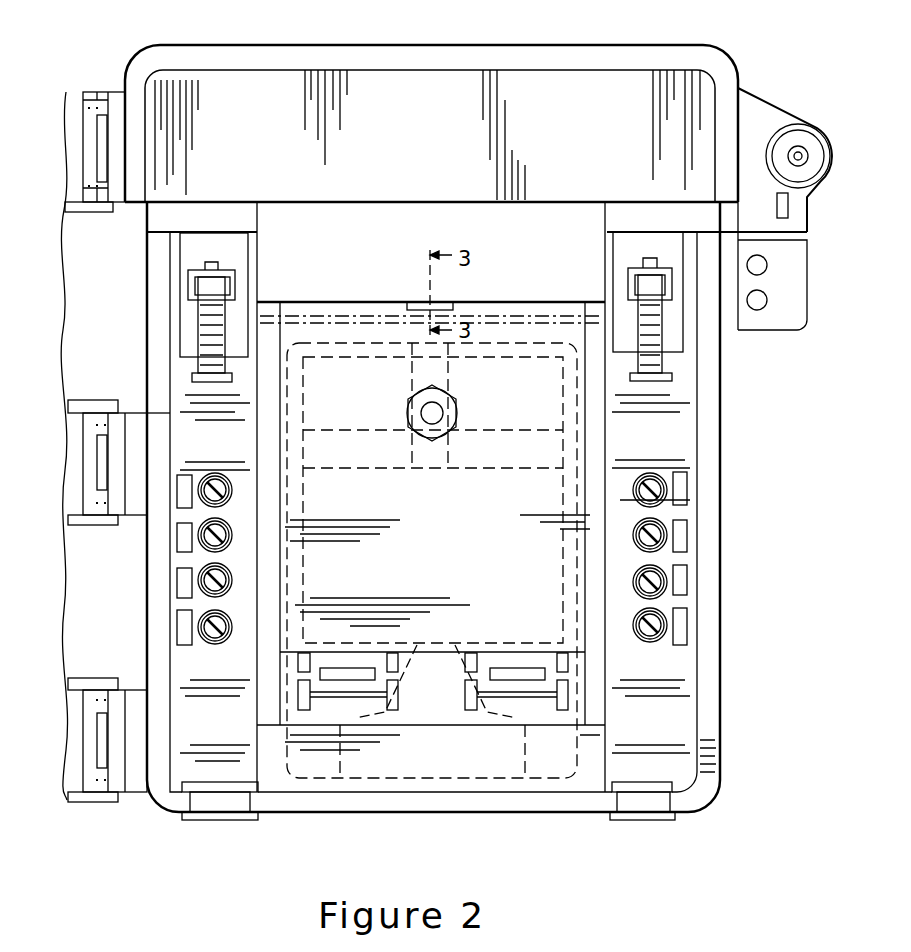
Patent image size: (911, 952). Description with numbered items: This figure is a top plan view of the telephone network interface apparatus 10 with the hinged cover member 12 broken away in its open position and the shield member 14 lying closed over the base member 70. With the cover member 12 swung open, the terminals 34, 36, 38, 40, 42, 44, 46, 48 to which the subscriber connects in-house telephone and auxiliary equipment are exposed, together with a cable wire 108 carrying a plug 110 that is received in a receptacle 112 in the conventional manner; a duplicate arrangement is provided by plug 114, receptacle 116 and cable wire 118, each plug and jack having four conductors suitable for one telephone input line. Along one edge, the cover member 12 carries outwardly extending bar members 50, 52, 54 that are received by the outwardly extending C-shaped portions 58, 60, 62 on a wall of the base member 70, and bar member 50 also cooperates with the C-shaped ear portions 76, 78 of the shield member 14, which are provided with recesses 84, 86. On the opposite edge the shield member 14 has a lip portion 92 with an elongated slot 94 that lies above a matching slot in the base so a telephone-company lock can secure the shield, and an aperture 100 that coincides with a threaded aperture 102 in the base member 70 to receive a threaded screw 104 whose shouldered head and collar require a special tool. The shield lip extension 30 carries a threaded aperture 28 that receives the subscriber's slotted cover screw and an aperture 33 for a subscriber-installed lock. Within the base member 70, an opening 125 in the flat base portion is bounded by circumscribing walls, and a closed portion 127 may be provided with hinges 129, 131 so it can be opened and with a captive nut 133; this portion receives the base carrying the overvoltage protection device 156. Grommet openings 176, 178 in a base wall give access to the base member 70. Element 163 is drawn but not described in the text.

The telephone network interface apparatus 10 is at (577, 36).
The cover member 12 is at (66, 92).
The shield member 14 is at (688, 75).
The threaded aperture 28 is at (765, 266).
The shield lip extension 30 is at (795, 296).
The aperture 33 is at (760, 304).
The terminal 34 is at (233, 492).
The terminal 36 is at (233, 537).
The terminal 38 is at (233, 581).
The terminal 40 is at (233, 627).
The terminal 42 is at (668, 491).
The terminal 44 is at (668, 536).
The terminal 46 is at (668, 584).
The terminal 48 is at (668, 627).
The bar member 50 is at (100, 162).
The bar member 52 is at (103, 473).
The bar member 54 is at (103, 752).
The C-shaped portion 58 is at (85, 125).
The C-shaped portion 60 is at (87, 443).
The C-shaped portion 62 is at (88, 714).
The base member 70 is at (747, 762).
The C-shaped portion 76 is at (88, 96).
The C-shaped portion 78 is at (85, 197).
The recess 84 is at (103, 96).
The recess 86 is at (97, 208).
The lip portion 92 is at (757, 112).
The elongated slot 94 is at (785, 210).
The aperture 100 is at (798, 148).
The threaded aperture 102 is at (798, 156).
The threaded screw 104 is at (810, 153).
The cable wire 108 is at (205, 322).
The plug 110 is at (197, 288).
The receptacle 112 is at (218, 278).
The plug 114 is at (660, 280).
The receptacle 116 is at (637, 275).
The cable wire 118 is at (665, 330).
The opening 125 is at (604, 452).
The closed portion 127 is at (432, 514).
The hinge 129 is at (343, 676).
The hinge 131 is at (505, 676).
The captive nut 133 is at (436, 413).
The overvoltage protection device 156 is at (370, 426).
The tab 163 is at (455, 306).
The grommet opening 176 is at (226, 810).
The grommet opening 178 is at (650, 806).